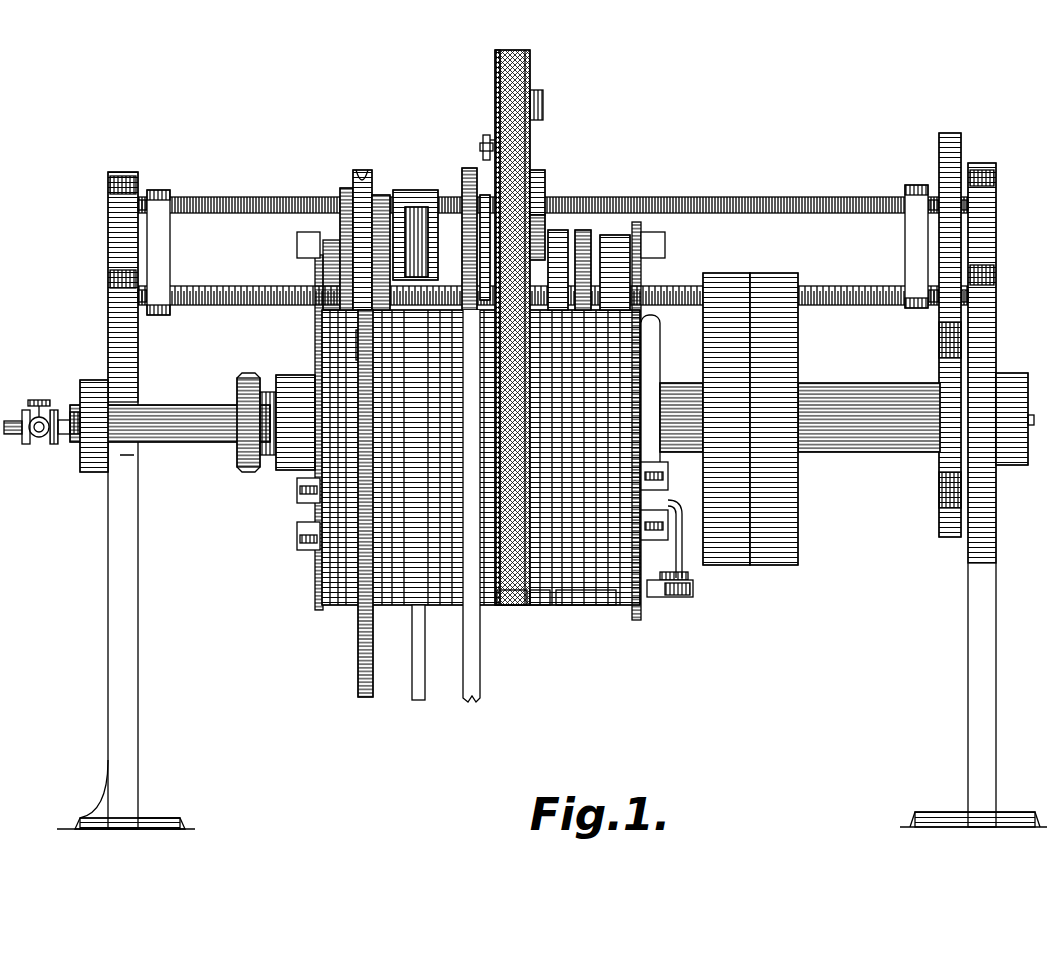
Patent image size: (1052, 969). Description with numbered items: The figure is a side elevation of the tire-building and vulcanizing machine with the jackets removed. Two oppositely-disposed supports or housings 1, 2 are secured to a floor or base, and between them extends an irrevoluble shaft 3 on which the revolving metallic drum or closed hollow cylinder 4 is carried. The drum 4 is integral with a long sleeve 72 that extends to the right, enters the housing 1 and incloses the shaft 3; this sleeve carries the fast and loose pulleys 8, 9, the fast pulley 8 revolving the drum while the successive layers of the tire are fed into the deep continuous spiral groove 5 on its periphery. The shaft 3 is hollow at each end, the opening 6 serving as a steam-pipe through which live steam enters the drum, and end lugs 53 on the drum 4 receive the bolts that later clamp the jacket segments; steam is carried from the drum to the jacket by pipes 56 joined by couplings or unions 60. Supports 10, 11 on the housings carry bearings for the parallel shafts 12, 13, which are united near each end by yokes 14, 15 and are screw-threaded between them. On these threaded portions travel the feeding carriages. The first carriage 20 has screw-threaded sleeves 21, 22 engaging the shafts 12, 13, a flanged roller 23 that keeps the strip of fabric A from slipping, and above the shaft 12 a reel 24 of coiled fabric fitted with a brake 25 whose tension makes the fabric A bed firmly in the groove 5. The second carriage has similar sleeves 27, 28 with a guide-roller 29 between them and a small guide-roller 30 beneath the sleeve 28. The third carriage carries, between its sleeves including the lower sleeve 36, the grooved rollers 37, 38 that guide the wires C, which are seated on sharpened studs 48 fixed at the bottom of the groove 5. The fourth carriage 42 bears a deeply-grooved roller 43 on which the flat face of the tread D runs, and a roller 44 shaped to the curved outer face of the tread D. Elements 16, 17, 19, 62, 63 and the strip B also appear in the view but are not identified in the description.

The support or housing 1 is at (968, 630).
The support or housing 2 is at (108, 633).
The irrevoluble shaft 3 is at (192, 422).
The drum or closed hollow cylinder 4 is at (488, 421).
The spiral groove 5 is at (534, 606).
The opening 6 is at (1021, 419).
The fast pulley 8 is at (725, 274).
The loose pulley 9 is at (772, 274).
The support 10 is at (982, 166).
The support 11 is at (121, 174).
The shaft 12 is at (845, 200).
The shaft 13 is at (845, 290).
The yoke 14 is at (905, 241).
The yoke 15 is at (166, 252).
The gear wheel 16 is at (946, 135).
The gear portion 17 is at (939, 337).
The gear portion 19 is at (939, 492).
The carriage 20 is at (492, 138).
The screw-threaded sleeve 21 is at (545, 218).
The screw-threaded sleeve 22 is at (560, 240).
The roller 23 is at (545, 185).
The reel 24 is at (531, 73).
The brake 25 is at (483, 144).
The screw-threaded sleeve 27 is at (485, 195).
The screw-threaded sleeve 28 is at (440, 215).
The guide-roller 29 is at (466, 170).
The small guide-roller 30 is at (585, 240).
The sleeve 36 is at (380, 196).
The roller 37 is at (415, 250).
The roller 38 is at (335, 262).
The carriage 42 is at (343, 190).
The deeply-grooved roller 43 is at (356, 343).
The roller 44 is at (360, 172).
The studs 48 is at (560, 606).
The end lugs 53 is at (297, 245).
The pipe 56 is at (682, 560).
The coupling or union 60 is at (693, 589).
The valve 62 is at (39, 400).
The pipe 63 is at (35, 435).
The sleeve 72 is at (850, 383).
The strip of fabric A is at (508, 606).
The strap B is at (468, 520).
The wires C is at (415, 666).
The tread portion D is at (364, 519).